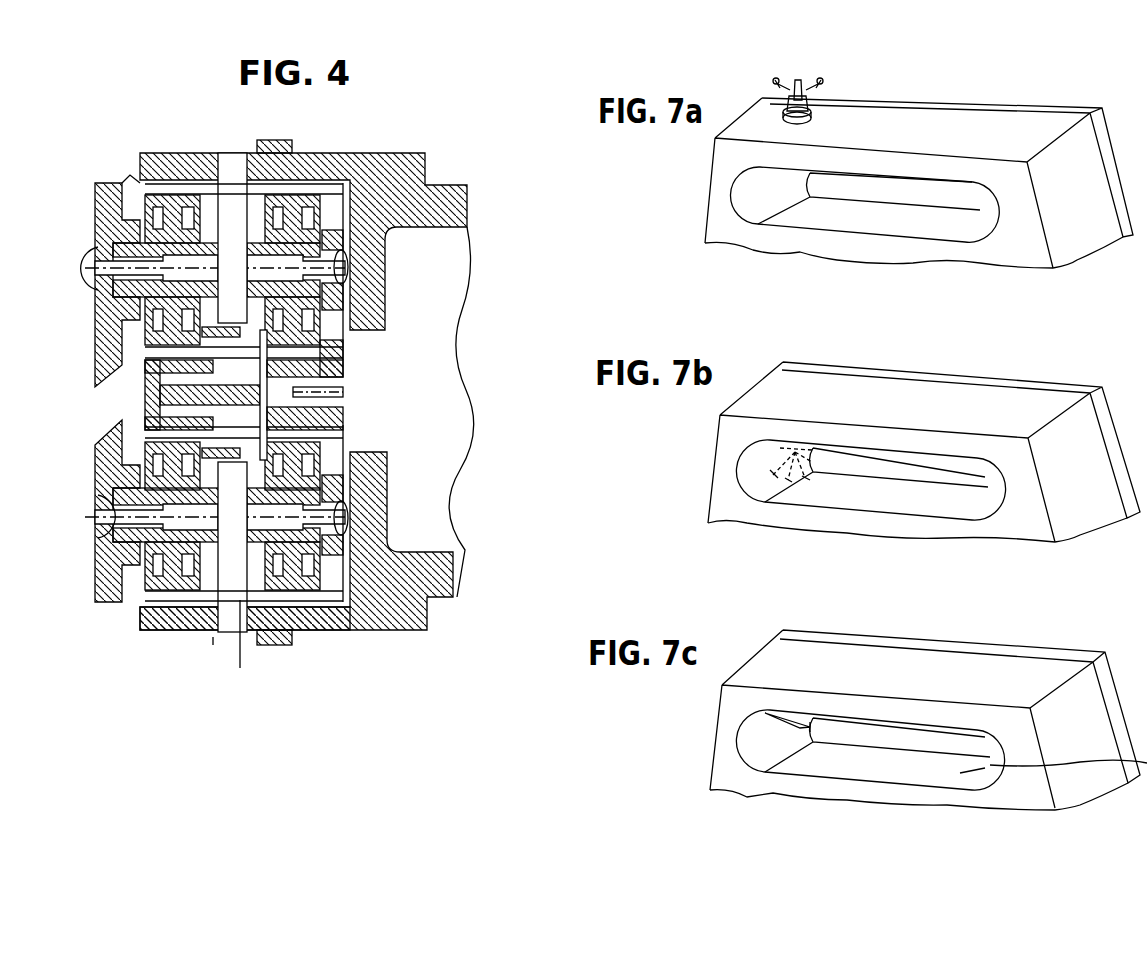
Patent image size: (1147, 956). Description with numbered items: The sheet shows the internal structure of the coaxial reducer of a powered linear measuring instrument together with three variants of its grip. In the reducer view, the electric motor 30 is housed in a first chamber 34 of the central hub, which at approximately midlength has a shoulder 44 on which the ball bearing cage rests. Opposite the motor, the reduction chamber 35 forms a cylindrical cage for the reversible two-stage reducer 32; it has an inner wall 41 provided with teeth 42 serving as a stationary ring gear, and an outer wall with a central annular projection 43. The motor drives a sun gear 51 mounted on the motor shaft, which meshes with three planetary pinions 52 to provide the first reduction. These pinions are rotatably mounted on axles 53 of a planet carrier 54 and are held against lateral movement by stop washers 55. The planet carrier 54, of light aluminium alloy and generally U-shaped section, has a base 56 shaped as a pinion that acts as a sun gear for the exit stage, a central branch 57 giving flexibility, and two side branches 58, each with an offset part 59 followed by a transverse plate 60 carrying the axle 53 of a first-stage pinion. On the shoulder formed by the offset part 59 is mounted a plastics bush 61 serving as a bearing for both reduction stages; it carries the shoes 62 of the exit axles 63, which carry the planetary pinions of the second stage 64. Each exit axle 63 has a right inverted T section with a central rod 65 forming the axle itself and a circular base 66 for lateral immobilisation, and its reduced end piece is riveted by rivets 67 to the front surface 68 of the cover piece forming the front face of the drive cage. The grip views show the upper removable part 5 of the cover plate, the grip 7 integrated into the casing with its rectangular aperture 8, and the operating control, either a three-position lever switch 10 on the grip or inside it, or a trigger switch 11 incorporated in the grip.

In FIG. 7a, the upper removable part 5 is at (1050, 108).
In FIG. 7b, the upper removable part 5 is at (1027, 386).
In FIG. 7c, the upper removable part 5 is at (1037, 653).
In FIG. 7a, the grip 7 is at (805, 242).
In FIG. 7b, the grip 7 is at (820, 516).
In FIG. 7c, the grip 7 is at (780, 777).
In FIG. 7a, the aperture 8 is at (953, 228).
In FIG. 7b, the aperture 8 is at (947, 503).
In FIG. 7c, the aperture 8 is at (870, 750).
In FIG. 7a, the switch 10 is at (815, 72).
In FIG. 7b, the switch 10 is at (790, 482).
In FIG. 7c, the trigger switch 11 is at (777, 723).
In FIG. 4, the electric motor 30 is at (443, 508).
In FIG. 4, the reducer 32 is at (148, 640).
In FIG. 4, the first chamber 34 is at (475, 202).
In FIG. 4, the reduction chamber 35 is at (240, 650).
In FIG. 4, the inner wall 41 is at (213, 637).
In FIG. 4, the teeth 42 is at (243, 153).
In FIG. 4, the annular projection 43 is at (290, 142).
In FIG. 4, the shoulder 44 is at (448, 168).
In FIG. 4, the sun gear 51 is at (343, 410).
In FIG. 4, the planetary pinion 52 is at (333, 228).
In FIG. 4, the axle 53 is at (345, 232).
In FIG. 4, the planet carrier 54 is at (138, 405).
In FIG. 4, the stop washer 55 is at (343, 292).
In FIG. 4, the base 56 is at (137, 380).
In FIG. 4, the central branch 57 is at (343, 362).
In FIG. 4, the side branch 58 is at (197, 630).
In FIG. 4, the offset part 59 is at (343, 412).
In FIG. 4, the plate 60 is at (343, 300).
In FIG. 4, the plastics bush 61 is at (140, 630).
In FIG. 4, the shoe 62 is at (218, 190).
In FIG. 4, the exit axle 63 is at (130, 280).
In FIG. 4, the planetary pinion of the second stage 64 is at (118, 185).
In FIG. 4, the central rod 65 is at (110, 185).
In FIG. 4, the circular base 66 is at (178, 185).
In FIG. 4, the rivet 67 is at (92, 265).
In FIG. 4, the front surface 68 is at (93, 332).